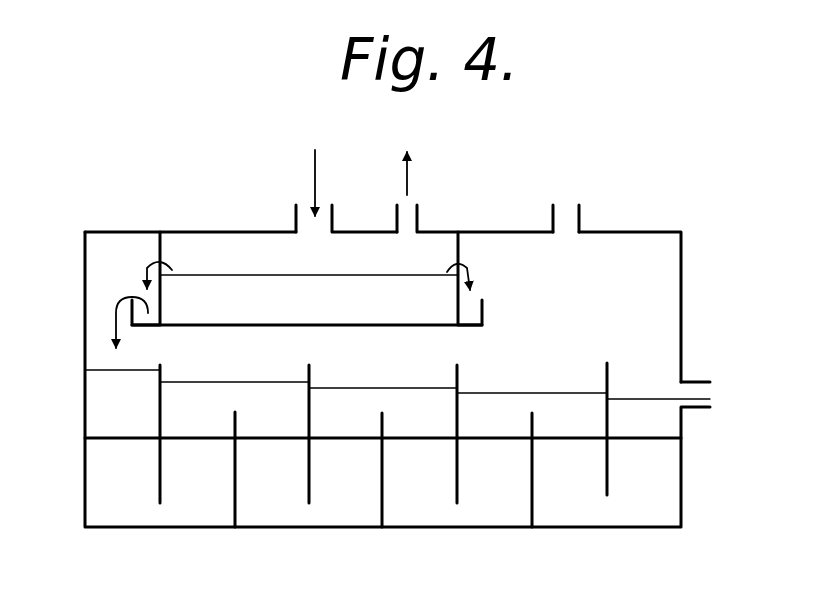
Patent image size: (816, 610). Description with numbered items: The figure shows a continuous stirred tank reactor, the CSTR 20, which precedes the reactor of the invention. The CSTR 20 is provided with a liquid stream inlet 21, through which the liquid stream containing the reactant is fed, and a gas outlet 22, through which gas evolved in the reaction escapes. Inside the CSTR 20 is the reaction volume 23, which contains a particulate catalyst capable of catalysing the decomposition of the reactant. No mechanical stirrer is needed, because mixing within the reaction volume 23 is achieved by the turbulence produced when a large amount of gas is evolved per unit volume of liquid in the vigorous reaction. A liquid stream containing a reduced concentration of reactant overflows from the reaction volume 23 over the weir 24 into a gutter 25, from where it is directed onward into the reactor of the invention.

The CSTR 20 is at (306, 263).
The liquid stream inlet 21 is at (320, 216).
The gas outlet 22 is at (406, 223).
The reaction volume 23 is at (210, 305).
The weir 24 is at (465, 268).
The gutter 25 is at (480, 307).